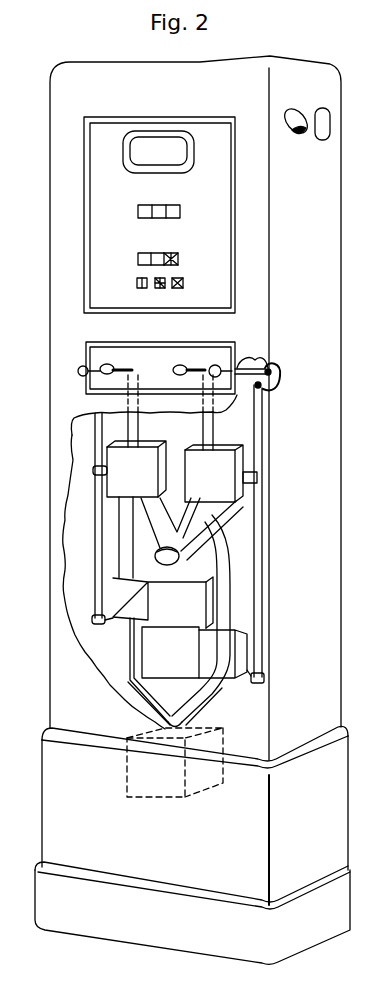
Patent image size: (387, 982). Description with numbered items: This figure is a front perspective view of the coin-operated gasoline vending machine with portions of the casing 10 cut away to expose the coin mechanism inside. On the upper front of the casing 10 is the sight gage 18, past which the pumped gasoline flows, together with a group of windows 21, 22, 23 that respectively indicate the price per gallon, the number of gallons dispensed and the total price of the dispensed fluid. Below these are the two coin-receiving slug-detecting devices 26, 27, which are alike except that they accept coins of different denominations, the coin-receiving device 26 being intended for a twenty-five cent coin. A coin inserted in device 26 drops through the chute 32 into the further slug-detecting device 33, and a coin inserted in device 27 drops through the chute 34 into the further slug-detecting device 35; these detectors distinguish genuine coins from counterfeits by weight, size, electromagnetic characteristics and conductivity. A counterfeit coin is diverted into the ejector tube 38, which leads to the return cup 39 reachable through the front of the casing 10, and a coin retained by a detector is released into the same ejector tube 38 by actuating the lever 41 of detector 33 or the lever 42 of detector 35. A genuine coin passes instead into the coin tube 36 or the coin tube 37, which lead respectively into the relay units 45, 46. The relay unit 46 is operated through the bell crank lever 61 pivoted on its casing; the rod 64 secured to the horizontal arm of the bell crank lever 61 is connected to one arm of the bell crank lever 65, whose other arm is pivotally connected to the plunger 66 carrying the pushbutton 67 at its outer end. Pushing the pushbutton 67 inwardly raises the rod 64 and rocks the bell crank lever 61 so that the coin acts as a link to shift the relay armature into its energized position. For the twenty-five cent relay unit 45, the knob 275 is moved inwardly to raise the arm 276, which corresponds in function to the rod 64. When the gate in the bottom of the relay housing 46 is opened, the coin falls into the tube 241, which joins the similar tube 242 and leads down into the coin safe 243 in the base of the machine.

The casing 10 is at (80, 84).
The sight gage 18 is at (160, 150).
The window 21 is at (137, 284).
The window 22 is at (138, 258).
The window 23 is at (138, 210).
The coin-receiving slug-detecting device 26 is at (126, 363).
The coin-receiving slug-detecting device 27 is at (193, 364).
The knob 275 is at (82, 365).
The pushbutton 67 is at (215, 364).
The plunger 66 is at (247, 358).
The bell crank lever 65 is at (277, 368).
The rod 64 is at (263, 420).
The chute 32 is at (131, 429).
The chute 34 is at (212, 430).
The further slug-detecting device 33 is at (125, 461).
The further slug-detecting device 35 is at (217, 470).
The lever 41 is at (105, 470).
The lever 42 is at (241, 480).
The ejector tube 38 is at (190, 523).
The return cup 39 is at (179, 556).
The chute 36 is at (125, 540).
The chute 37 is at (223, 570).
The arm 276 is at (97, 532).
The relay unit 45 is at (184, 613).
The relay unit 46 is at (184, 667).
The bell crank lever 61 is at (92, 620).
The tube 242 is at (137, 693).
The tube 241 is at (205, 710).
The coin safe 243 is at (170, 795).